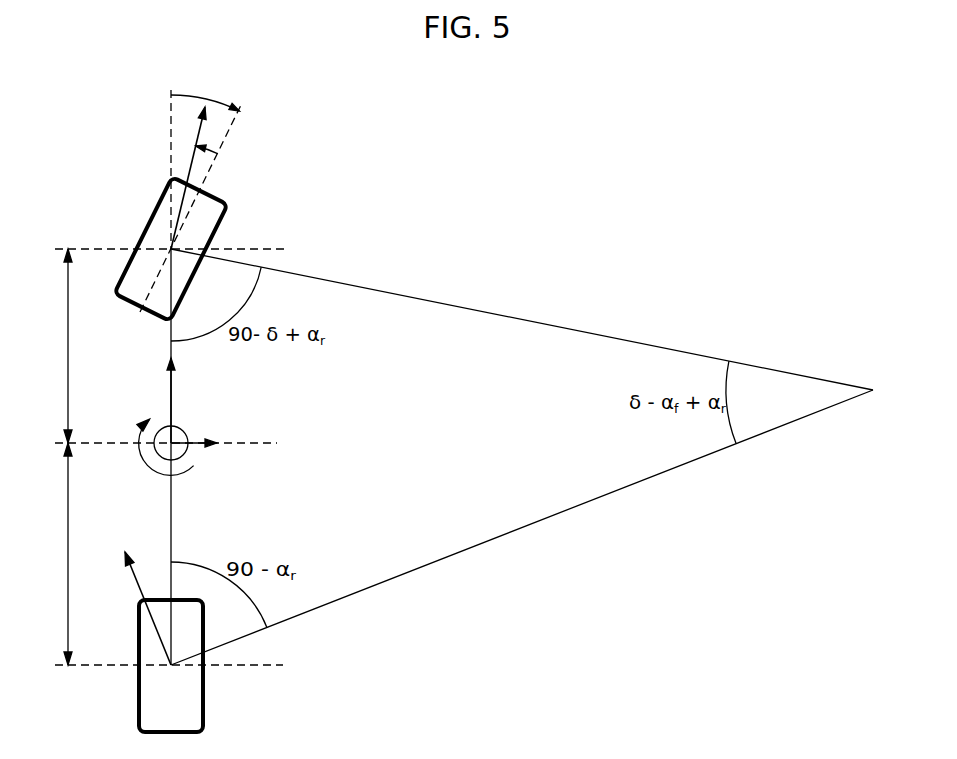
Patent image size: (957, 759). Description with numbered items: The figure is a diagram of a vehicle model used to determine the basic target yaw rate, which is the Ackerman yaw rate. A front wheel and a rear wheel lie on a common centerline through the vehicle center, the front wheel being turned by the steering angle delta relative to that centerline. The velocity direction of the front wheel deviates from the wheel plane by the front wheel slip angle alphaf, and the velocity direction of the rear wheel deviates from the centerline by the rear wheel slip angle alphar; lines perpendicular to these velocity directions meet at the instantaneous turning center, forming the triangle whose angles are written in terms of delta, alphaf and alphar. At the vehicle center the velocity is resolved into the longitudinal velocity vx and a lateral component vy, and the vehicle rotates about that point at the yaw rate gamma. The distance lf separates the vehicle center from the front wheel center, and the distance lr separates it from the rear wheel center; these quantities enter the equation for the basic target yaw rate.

The steering angle delta is at (190, 192).
The front wheel slip angle alphaf is at (194, 178).
The rear wheel slip angle alphar is at (135, 608).
The longitudinal velocity value vx is at (156, 399).
The lateral velocity νy at center of gravity vy is at (197, 457).
The target yaw rate gamma is at (160, 451).
The distance from the center of a front wheel to the center of the vehicle lf is at (60, 346).
The distance from the center of a rear wheel to the center of the vehicle lr is at (60, 554).